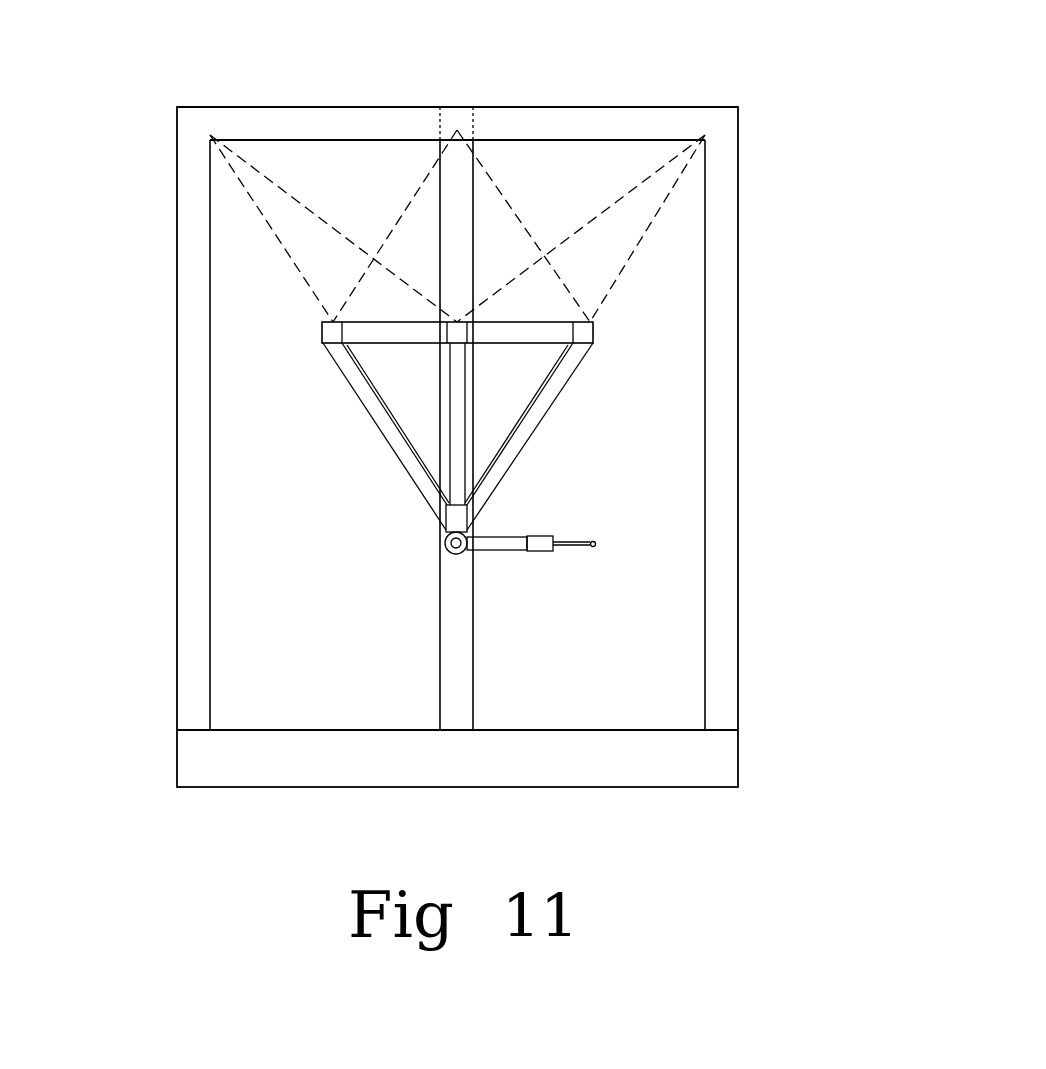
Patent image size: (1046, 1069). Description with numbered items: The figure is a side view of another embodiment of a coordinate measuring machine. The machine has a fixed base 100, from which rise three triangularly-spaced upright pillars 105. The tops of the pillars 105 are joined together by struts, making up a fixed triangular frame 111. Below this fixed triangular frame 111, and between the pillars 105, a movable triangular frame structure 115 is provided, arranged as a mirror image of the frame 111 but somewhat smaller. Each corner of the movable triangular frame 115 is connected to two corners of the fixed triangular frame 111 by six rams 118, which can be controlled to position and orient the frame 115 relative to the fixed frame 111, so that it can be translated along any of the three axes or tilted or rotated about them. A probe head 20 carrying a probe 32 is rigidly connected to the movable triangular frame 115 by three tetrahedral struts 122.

The fixed base 100 is at (523, 787).
The upright pillar 105 is at (176, 655).
The triangular frame 111 is at (517, 107).
The movable triangular frame structure 115 is at (383, 344).
The ram 118 is at (492, 177).
The tetrahedral strut 122 is at (455, 470).
The probe head 20 is at (446, 543).
The probe 32 is at (540, 535).